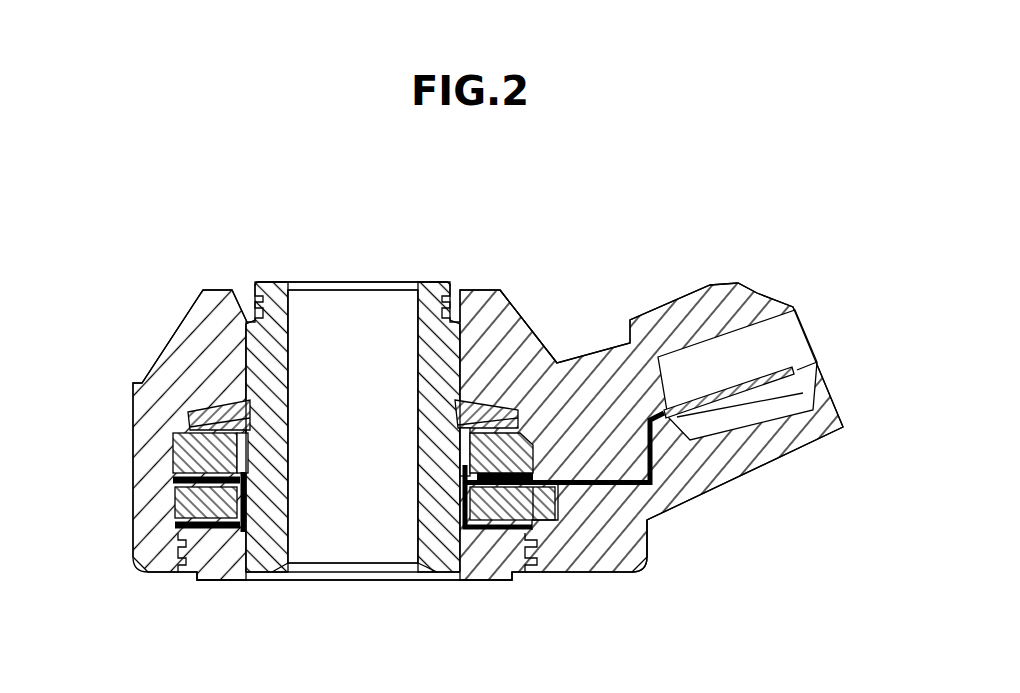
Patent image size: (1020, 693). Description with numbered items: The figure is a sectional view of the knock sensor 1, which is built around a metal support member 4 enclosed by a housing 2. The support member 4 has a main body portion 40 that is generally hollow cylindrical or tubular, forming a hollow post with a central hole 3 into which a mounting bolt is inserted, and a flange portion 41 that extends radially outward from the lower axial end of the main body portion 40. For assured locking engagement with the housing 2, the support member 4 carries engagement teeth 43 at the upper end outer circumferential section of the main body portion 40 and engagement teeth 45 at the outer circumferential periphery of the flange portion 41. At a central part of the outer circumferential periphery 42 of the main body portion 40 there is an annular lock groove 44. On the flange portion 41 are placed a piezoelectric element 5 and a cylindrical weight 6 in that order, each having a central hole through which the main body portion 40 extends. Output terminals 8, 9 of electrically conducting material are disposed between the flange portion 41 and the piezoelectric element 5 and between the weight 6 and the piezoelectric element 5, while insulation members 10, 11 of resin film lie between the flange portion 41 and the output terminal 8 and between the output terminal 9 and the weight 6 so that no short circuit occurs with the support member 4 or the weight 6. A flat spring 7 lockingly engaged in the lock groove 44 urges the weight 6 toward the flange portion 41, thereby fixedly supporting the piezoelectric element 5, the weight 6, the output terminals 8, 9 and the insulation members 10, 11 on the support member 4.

The knock sensor 1 is at (568, 211).
The housing 2 is at (207, 320).
The central hole 3 is at (290, 320).
The support member 4 is at (466, 350).
The piezoelectric element 5 is at (596, 485).
The weight 6 is at (647, 528).
The flat spring 7 is at (498, 408).
The output terminal 8 is at (560, 524).
The output terminal 9 is at (530, 490).
The insulation member 10 is at (533, 482).
The insulation member 11 is at (496, 483).
The main body portion 40 is at (437, 284).
The flange portion 41 is at (558, 500).
The outer circumferential periphery 42 is at (503, 385).
The engagement teeth 43 is at (439, 343).
The lock groove 44 is at (455, 430).
The engagement teeth 45 is at (538, 536).